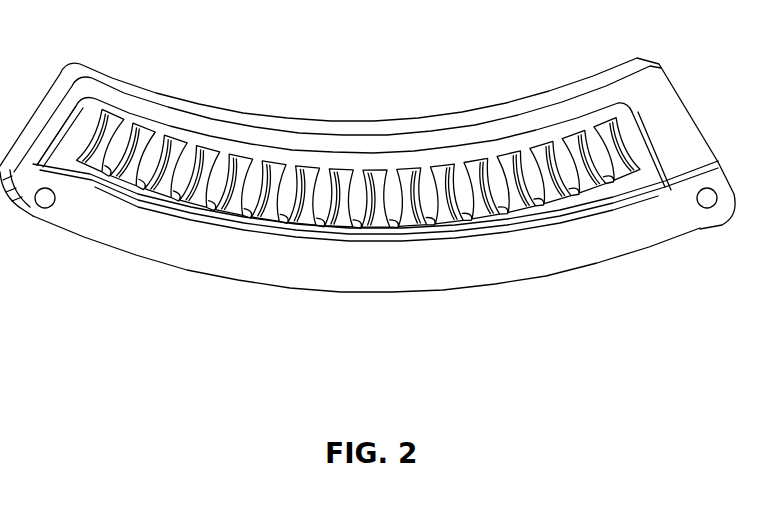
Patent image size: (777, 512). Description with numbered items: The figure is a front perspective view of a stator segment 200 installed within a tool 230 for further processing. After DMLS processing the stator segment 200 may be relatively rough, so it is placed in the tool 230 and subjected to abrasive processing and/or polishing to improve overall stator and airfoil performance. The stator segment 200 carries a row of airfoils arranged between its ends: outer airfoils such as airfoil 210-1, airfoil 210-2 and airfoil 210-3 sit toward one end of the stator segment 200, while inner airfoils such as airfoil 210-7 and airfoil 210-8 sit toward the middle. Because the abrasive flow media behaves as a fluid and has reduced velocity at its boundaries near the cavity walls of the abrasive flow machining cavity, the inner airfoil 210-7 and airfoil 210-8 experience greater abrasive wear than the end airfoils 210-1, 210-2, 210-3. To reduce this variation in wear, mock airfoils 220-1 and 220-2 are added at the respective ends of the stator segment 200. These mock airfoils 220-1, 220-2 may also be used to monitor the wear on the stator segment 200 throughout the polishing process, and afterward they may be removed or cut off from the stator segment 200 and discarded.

The stator segment 200 is at (627, 152).
The airfoil 210-1 is at (143, 143).
The airfoil 210-2 is at (170, 140).
The airfoil 210-3 is at (203, 150).
The airfoil 210-7 is at (343, 177).
The airfoil 210-8 is at (380, 190).
The mock airfoil 220-1 is at (118, 112).
The mock airfoil 220-2 is at (610, 115).
The tool 230 is at (675, 143).